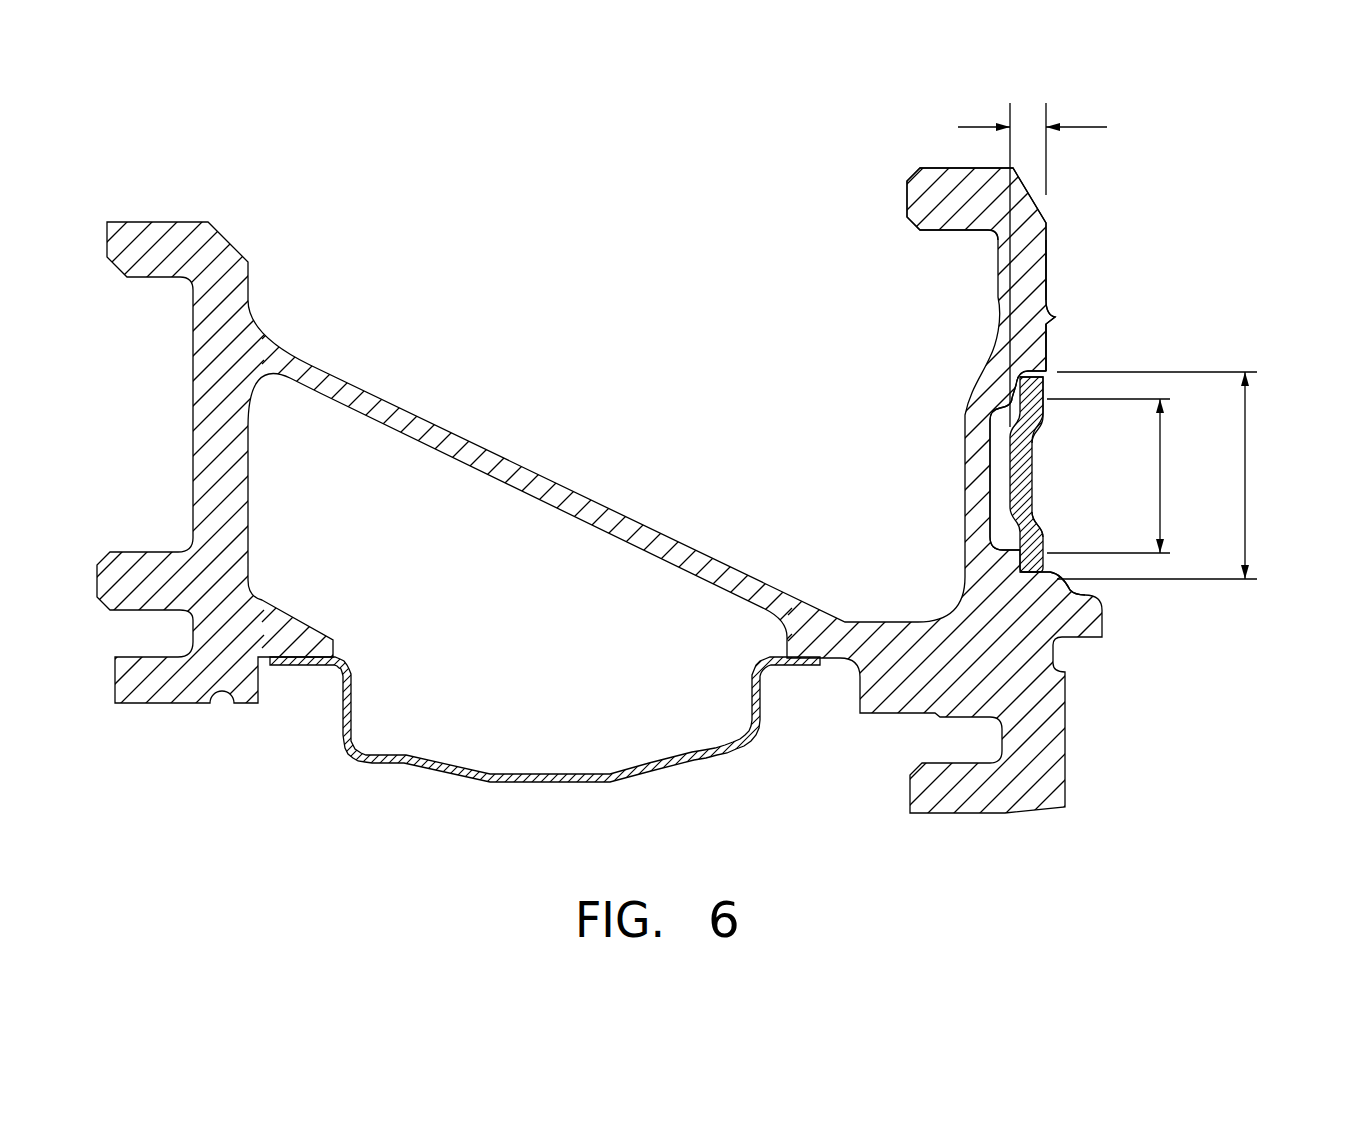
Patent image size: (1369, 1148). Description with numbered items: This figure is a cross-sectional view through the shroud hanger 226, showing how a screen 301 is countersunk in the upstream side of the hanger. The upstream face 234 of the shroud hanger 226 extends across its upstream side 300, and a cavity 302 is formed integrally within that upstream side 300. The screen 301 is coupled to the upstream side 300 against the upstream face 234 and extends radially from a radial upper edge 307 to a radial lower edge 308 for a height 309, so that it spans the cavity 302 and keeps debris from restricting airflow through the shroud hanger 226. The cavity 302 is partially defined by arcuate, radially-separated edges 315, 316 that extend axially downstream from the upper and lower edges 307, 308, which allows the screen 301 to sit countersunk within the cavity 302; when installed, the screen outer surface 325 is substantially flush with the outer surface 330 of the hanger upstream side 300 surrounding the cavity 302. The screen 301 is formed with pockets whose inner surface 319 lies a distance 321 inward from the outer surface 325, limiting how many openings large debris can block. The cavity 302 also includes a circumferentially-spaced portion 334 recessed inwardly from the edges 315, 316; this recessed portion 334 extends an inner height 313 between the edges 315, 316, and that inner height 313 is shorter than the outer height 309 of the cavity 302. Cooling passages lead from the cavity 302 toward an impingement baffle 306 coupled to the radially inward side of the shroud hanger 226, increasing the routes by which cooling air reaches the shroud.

The shroud hanger 226 is at (80, 266).
The upstream face 234 is at (1052, 252).
The upstream side 300 is at (1062, 188).
The screen 301 is at (1016, 372).
The cavity 302 is at (1002, 467).
The impingement baffle 306 is at (566, 786).
The radial upper edge 307 is at (1052, 372).
The radial lower edge 308 is at (1058, 578).
The height 309 is at (1247, 430).
The inner height 313 is at (1162, 487).
The edge 315 is at (1033, 438).
The edge 316 is at (1043, 538).
The inner surface 319 is at (1008, 505).
The distance 321 is at (1090, 127).
The outer surface 325 is at (1043, 557).
The outer surface 330 is at (1047, 284).
The circumferentially-spaced portion 334 is at (1000, 447).